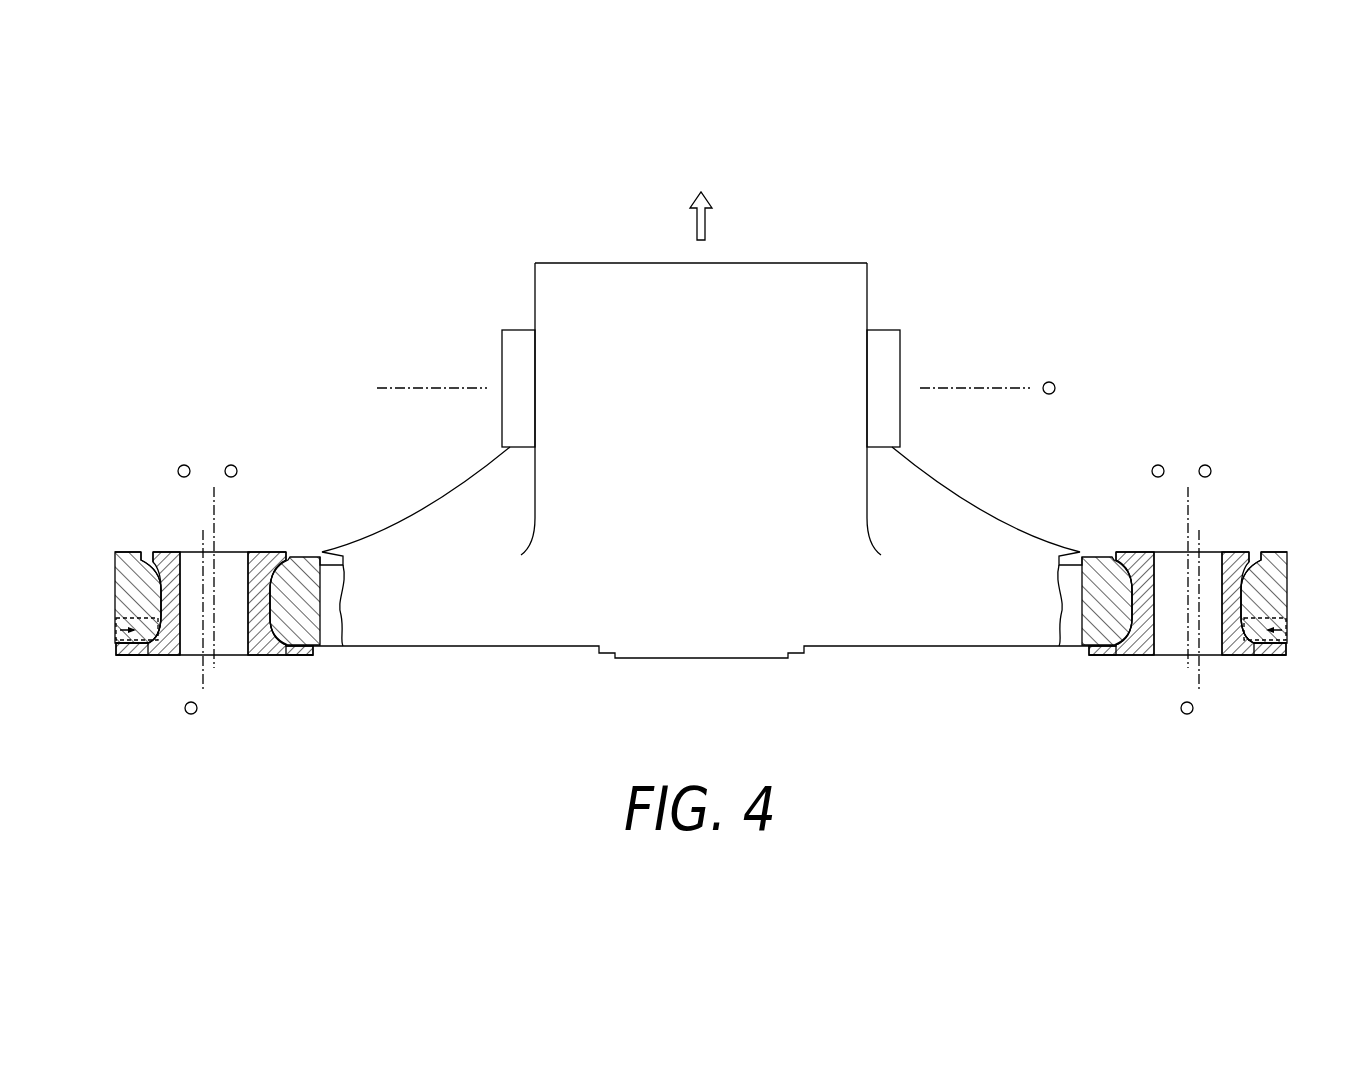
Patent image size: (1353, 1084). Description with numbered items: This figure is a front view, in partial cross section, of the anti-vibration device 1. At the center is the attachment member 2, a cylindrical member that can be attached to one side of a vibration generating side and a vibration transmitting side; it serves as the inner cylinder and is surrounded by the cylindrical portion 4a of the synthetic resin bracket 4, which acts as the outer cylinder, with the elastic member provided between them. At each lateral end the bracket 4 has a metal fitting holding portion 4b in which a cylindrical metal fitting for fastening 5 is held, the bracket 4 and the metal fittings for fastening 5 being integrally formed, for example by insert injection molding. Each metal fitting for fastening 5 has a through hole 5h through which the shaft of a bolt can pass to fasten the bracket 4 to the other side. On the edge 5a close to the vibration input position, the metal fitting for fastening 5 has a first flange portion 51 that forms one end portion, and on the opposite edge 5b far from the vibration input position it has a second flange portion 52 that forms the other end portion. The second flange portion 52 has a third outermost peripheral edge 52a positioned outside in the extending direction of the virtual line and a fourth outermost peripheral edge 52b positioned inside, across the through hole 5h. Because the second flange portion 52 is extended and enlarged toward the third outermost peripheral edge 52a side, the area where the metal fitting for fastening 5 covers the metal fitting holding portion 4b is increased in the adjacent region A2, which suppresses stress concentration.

The anti-vibration device 1 is at (445, 255).
The attachment member 2 is at (895, 342).
The bracket 4 is at (420, 512).
The cylindrical portion 4a is at (757, 272).
The metal fitting holding portion 4b is at (115, 600).
The metal fitting for fastening 5 is at (168, 585).
The edge 5a is at (162, 550).
The edge 5b is at (155, 657).
The through hole 5h is at (232, 620).
The flange portion 51 is at (147, 551).
The flange portion 52 is at (130, 652).
The third outermost peripheral edge 52a is at (120, 648).
The fourth outermost peripheral edge 52b is at (310, 656).
The region A2 is at (116, 634).